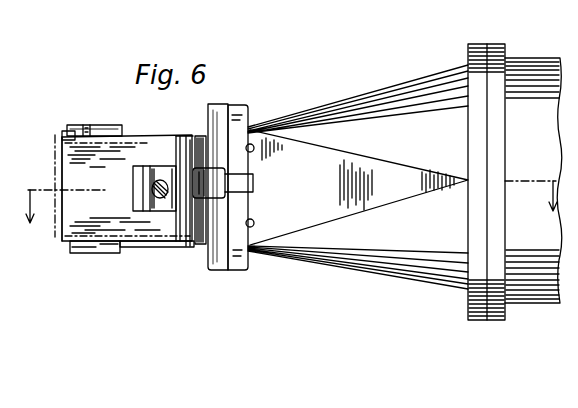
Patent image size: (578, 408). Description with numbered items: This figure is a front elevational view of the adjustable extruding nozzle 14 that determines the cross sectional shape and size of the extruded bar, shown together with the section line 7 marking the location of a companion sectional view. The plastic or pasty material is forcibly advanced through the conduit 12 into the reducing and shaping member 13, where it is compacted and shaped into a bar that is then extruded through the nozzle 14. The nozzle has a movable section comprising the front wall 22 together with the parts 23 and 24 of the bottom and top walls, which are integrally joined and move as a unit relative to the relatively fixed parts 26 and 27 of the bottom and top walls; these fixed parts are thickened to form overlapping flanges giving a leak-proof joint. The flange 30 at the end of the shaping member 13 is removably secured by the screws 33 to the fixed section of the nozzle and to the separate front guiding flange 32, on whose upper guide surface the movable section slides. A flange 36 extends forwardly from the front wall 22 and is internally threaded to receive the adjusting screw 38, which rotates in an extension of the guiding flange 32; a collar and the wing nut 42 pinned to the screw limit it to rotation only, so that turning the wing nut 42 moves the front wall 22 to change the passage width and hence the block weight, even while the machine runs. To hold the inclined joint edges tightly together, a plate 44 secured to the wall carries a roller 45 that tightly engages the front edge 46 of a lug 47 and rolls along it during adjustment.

The section line 7- 7 is at (282, 186).
The conduit 12 is at (534, 60).
The reducing and shaping member 13 is at (393, 92).
The extruding nozzle 14 is at (57, 237).
The front wall 22 is at (72, 170).
The part of bottom wall 23 is at (146, 242).
The part of top wall 24 is at (172, 140).
The fixed part of bottom wall 26 is at (171, 243).
The fixed part of top wall 27 is at (200, 135).
The flange 30 is at (244, 106).
The front guiding flange 32 is at (222, 105).
The screws 33 is at (255, 223).
The flange 36 is at (136, 180).
The adjusting screw 38 is at (150, 191).
The wing nut 42 is at (253, 180).
The plate 44 is at (118, 125).
The roller 45 is at (86, 125).
The front edge 46 is at (67, 133).
The lug 47 is at (72, 252).